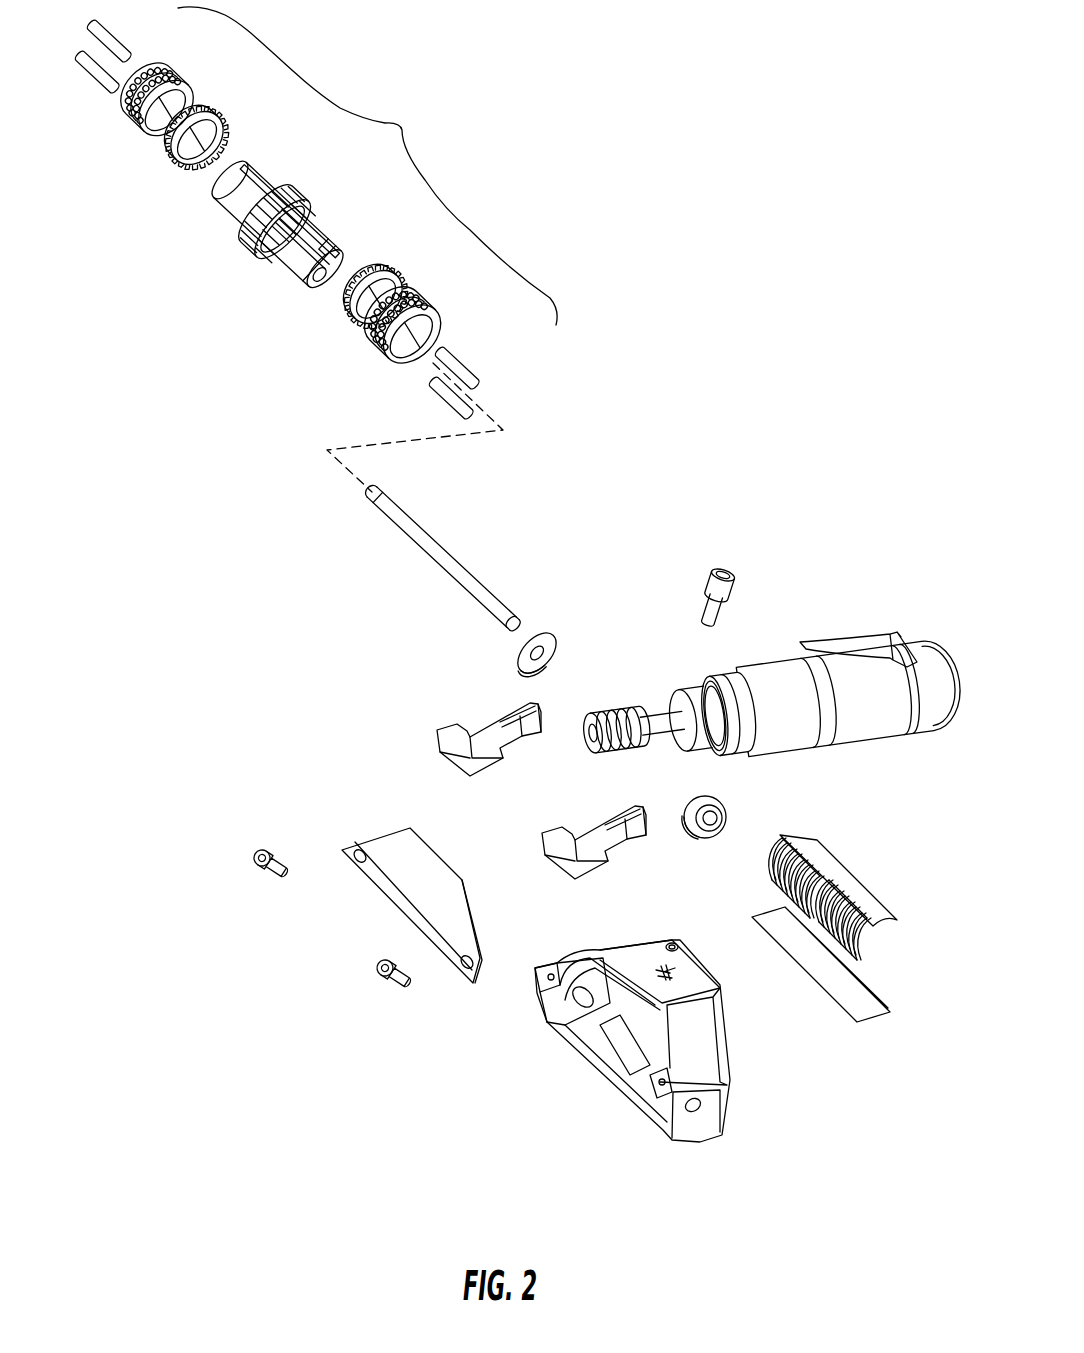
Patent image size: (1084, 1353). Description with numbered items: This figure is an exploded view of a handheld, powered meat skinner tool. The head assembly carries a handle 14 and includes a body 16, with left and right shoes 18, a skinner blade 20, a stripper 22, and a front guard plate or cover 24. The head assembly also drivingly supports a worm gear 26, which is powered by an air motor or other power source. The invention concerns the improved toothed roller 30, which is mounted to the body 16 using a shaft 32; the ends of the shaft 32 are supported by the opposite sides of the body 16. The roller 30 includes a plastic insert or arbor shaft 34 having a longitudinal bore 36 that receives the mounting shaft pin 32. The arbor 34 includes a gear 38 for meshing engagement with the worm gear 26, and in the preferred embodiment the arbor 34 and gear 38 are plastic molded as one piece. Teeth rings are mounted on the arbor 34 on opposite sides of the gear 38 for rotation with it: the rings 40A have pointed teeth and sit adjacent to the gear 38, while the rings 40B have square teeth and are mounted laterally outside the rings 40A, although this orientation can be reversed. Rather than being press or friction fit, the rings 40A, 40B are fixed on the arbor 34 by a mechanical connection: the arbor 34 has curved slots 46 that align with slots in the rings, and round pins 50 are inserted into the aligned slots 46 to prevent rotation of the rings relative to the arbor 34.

The handle 14 is at (763, 672).
The body 16 is at (710, 1049).
The shoes 18 is at (452, 730).
The skinner blade 20 is at (866, 1000).
The stripper 22 is at (850, 885).
The front guard plate 24 is at (392, 845).
The worm gear 26 is at (613, 716).
The toothed roller 30 is at (367, 166).
The shaft 32 is at (438, 553).
The arbor shaft 34 is at (309, 229).
The longitudinal bore 36 is at (345, 257).
The gear 38 is at (302, 197).
The ring 40A is at (220, 118).
The ring 40B is at (175, 78).
The slots 46 is at (252, 168).
The pins 50 is at (117, 44).